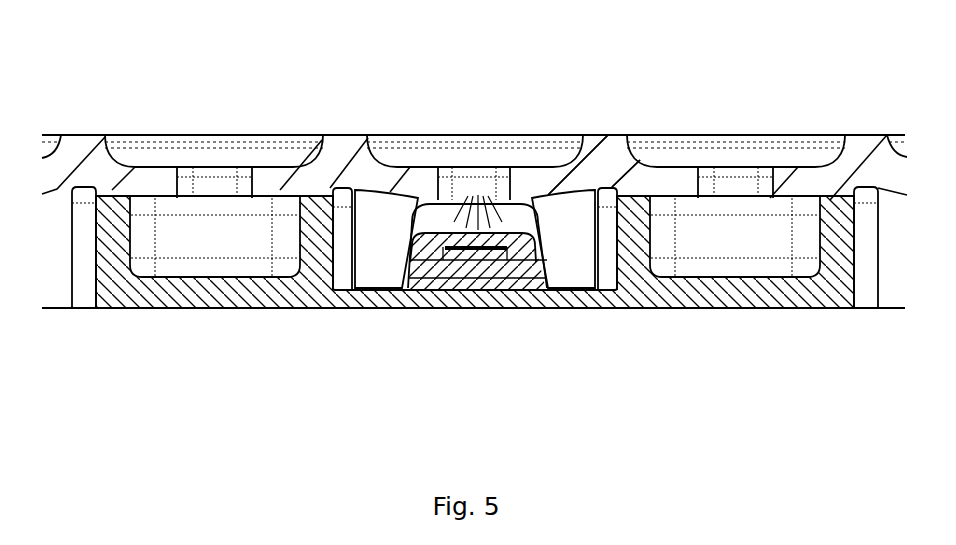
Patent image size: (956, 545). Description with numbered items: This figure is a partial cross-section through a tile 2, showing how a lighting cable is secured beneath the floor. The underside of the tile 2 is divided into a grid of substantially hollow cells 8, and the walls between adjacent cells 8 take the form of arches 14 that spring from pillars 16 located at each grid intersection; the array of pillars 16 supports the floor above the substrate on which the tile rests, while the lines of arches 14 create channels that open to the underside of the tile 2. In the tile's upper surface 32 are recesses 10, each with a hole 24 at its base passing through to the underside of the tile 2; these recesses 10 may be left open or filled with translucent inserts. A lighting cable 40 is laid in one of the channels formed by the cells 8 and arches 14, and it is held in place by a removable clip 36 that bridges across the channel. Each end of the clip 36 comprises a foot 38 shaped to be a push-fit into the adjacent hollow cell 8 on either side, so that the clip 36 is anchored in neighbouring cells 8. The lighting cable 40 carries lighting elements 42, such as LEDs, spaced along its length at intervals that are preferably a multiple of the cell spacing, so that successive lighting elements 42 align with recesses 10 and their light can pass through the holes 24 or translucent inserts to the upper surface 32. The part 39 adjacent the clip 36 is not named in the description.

The tile 2 is at (750, 100).
The cell 8 is at (215, 230).
The recess 10 is at (402, 153).
The arch 14 is at (577, 260).
The pillar 16 is at (866, 282).
The hole 24 is at (478, 177).
The upper surface 32 is at (600, 135).
The clip 36 is at (283, 333).
The foot 38 is at (210, 292).
The post 39 is at (378, 300).
The lighting cable 40 is at (500, 283).
The lighting element 42 is at (466, 249).